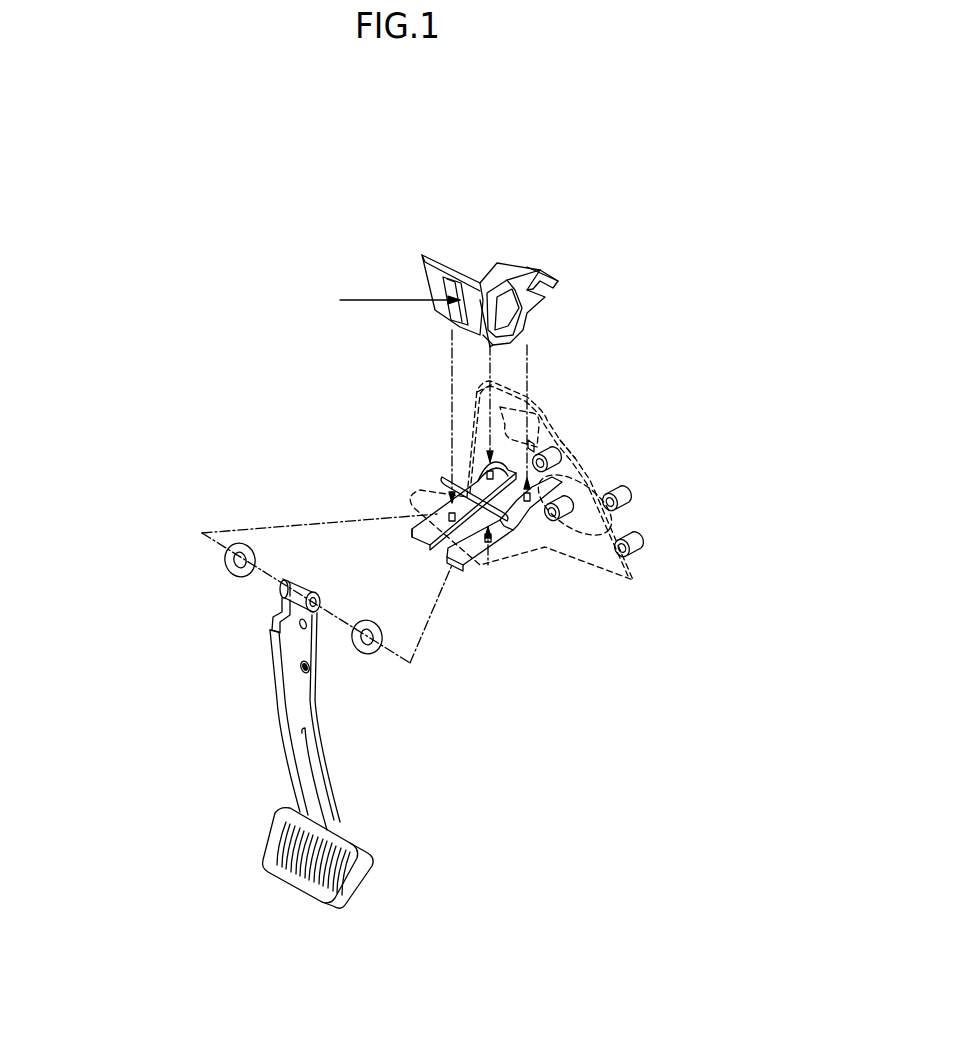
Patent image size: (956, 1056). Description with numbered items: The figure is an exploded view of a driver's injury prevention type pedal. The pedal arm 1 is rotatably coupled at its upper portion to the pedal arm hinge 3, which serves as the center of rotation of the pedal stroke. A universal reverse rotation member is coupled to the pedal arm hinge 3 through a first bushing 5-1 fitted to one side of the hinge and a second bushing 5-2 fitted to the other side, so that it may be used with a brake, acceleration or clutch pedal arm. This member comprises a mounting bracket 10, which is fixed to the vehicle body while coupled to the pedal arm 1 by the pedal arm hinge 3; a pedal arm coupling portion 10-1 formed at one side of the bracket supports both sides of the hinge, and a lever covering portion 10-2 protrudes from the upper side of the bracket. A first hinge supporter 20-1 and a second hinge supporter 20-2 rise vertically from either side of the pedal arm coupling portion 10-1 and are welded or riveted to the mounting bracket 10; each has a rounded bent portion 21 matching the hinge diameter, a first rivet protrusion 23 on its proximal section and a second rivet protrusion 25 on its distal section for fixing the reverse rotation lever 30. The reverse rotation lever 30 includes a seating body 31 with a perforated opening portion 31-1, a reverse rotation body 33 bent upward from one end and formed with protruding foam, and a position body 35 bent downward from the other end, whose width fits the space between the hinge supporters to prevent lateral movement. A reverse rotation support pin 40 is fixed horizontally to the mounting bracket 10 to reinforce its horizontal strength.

The pedal arm 1 is at (312, 742).
The pedal arm hinge 3 is at (277, 588).
The first bushing 5-1 is at (370, 650).
The second bushing 5-2 is at (225, 568).
The mounting bracket 10 is at (630, 582).
The pedal arm coupling portion 10-1 is at (557, 472).
The lever covering portion 10-2 is at (540, 418).
The first hinge supporter 20-1 is at (455, 557).
The second hinge supporter 20-2 is at (407, 522).
The bent portion 21 is at (487, 503).
The first rivet protrusion 23 is at (437, 527).
The second rivet protrusion 25 is at (487, 470).
The reverse rotation lever 30 is at (565, 162).
The seating body 31 is at (487, 275).
The perforated opening portion 31-1 is at (503, 293).
The reverse rotation body 33 is at (427, 257).
The position body 35 is at (537, 270).
The reverse rotation support pin 40 is at (547, 457).